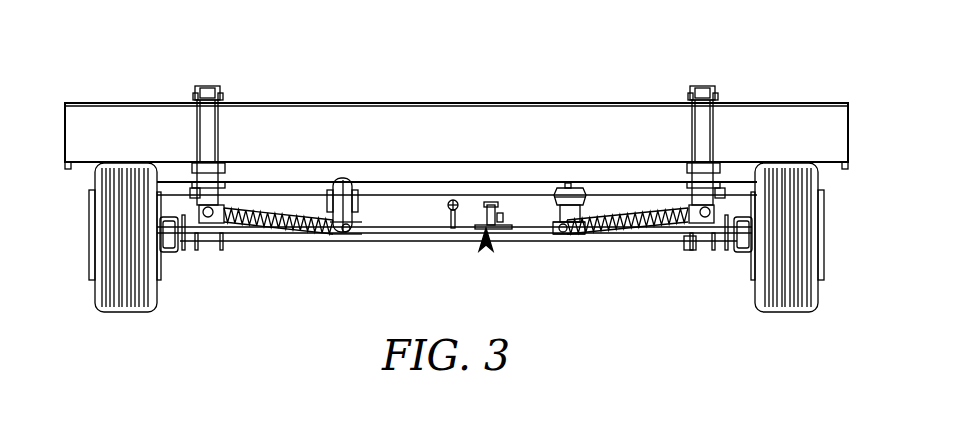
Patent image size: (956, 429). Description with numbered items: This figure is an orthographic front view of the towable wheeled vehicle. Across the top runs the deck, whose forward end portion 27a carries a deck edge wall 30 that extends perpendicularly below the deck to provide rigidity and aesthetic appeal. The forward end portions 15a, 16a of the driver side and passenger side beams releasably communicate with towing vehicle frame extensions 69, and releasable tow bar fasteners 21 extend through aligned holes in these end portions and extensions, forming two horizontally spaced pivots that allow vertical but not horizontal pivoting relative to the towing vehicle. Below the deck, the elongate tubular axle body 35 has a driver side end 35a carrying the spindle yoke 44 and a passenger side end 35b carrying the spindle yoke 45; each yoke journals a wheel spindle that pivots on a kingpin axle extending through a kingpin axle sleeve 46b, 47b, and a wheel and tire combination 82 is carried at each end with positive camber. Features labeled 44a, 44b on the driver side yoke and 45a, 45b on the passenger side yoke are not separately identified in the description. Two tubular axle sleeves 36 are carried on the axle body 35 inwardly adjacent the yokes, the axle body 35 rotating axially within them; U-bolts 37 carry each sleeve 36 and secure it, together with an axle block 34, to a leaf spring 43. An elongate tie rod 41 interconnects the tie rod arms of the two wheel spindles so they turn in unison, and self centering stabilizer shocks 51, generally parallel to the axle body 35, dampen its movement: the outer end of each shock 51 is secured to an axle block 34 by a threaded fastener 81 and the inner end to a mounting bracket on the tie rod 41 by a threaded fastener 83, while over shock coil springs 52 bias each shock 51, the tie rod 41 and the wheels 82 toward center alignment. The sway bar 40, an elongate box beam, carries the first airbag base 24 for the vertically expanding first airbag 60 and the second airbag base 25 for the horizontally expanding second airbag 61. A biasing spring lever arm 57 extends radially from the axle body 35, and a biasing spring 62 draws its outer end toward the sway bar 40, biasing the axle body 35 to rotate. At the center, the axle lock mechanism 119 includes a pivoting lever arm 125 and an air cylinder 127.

The forward end portion of driver side beam 15a is at (707, 142).
The forward end portion of passenger side beam 16a is at (203, 142).
The releasable tow bar fastener 21 is at (230, 97).
The first airbag base 24 is at (557, 223).
The second airbag base 25 is at (342, 188).
The forward end portion of deck 27a is at (427, 101).
The deck edge wall 30 is at (68, 125).
The axle block 34 is at (203, 203).
The tubular axle body 35 is at (362, 242).
The driver side end of axle body 35a is at (672, 237).
The passenger side end of axle body 35b is at (267, 243).
The tubular axle sleeve 36 is at (207, 248).
The U-bolt 37 is at (222, 248).
The sway bar 40 is at (271, 191).
The tie rod 41 is at (385, 237).
The leaf spring 43 is at (698, 192).
The driver side spindle yoke 44 is at (760, 247).
The right upper flange 44a is at (743, 210).
The right side plate 44b is at (744, 255).
The passenger side spindle yoke 45 is at (158, 222).
The left upper flange 45a is at (187, 193).
The left side plate 45b is at (170, 252).
The kingpin axle sleeve 46b is at (745, 240).
The kingpin axle sleeve 47b is at (165, 240).
The self centering stabilizer shock 51 is at (238, 210).
The over shock coil spring 52 is at (317, 214).
The biasing spring lever arm 57 is at (452, 222).
The first airbag 60 is at (567, 187).
The second airbag 61 is at (356, 197).
The biasing spring 62 is at (449, 201).
The towing vehicle frame extension 69 is at (198, 107).
The threaded fastener 81 is at (688, 240).
The wheel and tire combination 82 is at (138, 300).
The threaded fastener 83 is at (343, 234).
The axle lock mechanism 119 is at (485, 246).
The pivoting lever arm 125 is at (498, 220).
The air cylinder 127 is at (487, 203).